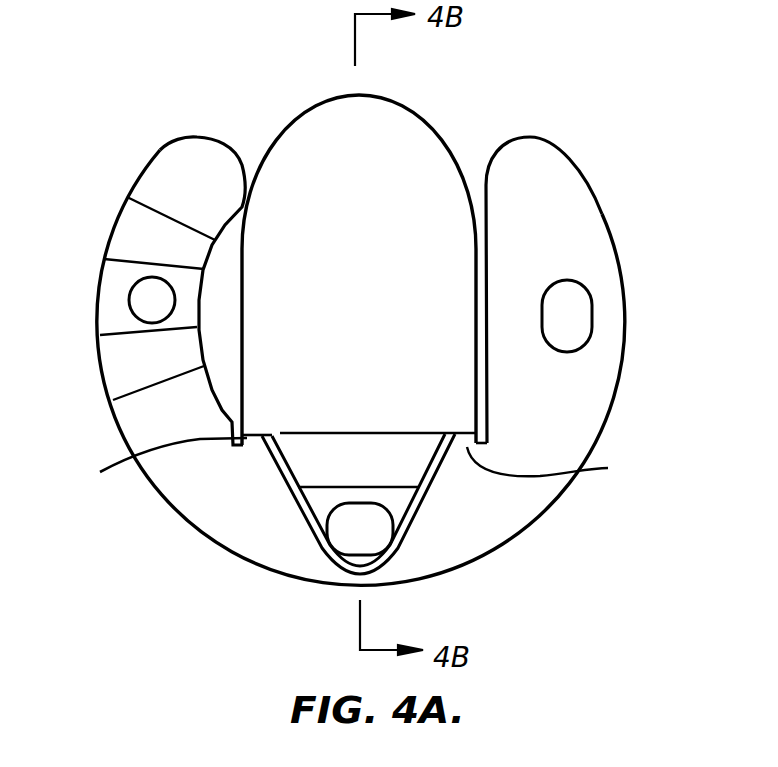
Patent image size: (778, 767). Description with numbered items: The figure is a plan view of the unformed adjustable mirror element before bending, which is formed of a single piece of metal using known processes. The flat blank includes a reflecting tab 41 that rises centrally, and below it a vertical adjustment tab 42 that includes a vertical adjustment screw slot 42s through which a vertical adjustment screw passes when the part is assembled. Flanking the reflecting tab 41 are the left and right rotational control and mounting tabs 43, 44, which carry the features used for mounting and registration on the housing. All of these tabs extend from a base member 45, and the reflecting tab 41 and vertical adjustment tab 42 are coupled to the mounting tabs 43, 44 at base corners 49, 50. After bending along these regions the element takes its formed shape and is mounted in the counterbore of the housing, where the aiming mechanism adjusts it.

The reflecting tab 41 is at (407, 113).
The vertical adjustment tab 42 is at (417, 493).
The vertical adjustment screw slot 42s is at (368, 527).
The left rotational control and mounting tab 43 is at (100, 361).
The right rotational control and mounting tab 44 is at (606, 362).
The base member 45 is at (217, 541).
The base corner 49 is at (151, 464).
The base corner 50 is at (557, 467).